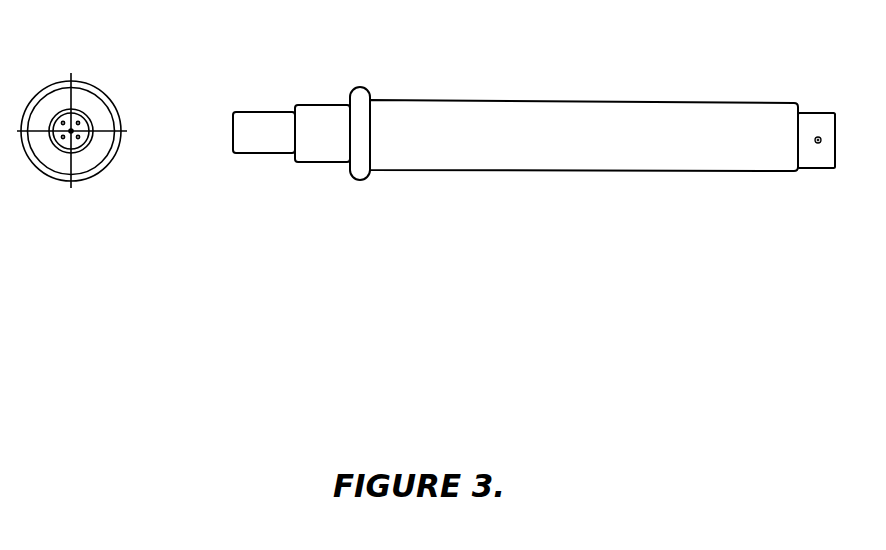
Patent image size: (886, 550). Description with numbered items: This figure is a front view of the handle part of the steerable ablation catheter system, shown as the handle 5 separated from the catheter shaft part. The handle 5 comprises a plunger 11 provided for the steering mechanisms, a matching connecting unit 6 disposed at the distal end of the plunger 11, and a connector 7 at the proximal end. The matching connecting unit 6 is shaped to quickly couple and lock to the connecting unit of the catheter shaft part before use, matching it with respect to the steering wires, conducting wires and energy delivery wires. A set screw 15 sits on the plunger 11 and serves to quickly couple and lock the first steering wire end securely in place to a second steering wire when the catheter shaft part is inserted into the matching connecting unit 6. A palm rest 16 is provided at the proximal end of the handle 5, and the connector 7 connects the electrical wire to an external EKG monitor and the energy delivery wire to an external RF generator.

The handle 5 is at (538, 96).
The matching connecting unit 6 is at (817, 172).
The connector 7 is at (275, 104).
The plunger 11 is at (827, 212).
The set screw 15 is at (815, 136).
The palm rest 16 is at (357, 182).